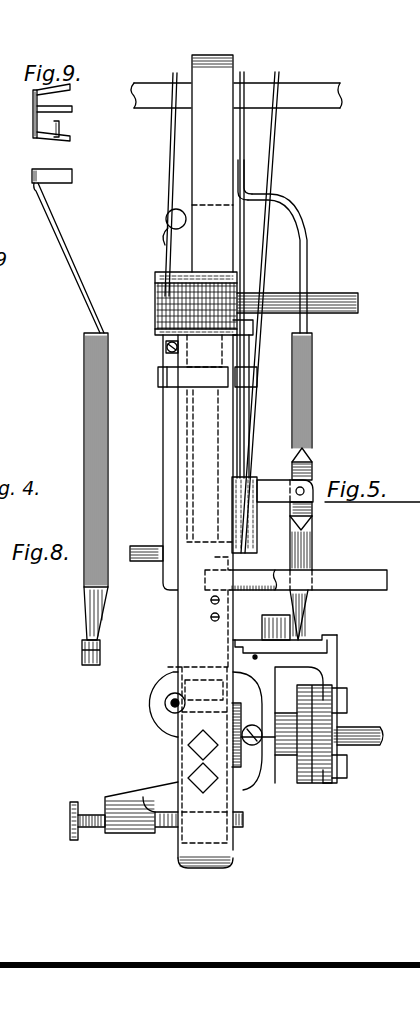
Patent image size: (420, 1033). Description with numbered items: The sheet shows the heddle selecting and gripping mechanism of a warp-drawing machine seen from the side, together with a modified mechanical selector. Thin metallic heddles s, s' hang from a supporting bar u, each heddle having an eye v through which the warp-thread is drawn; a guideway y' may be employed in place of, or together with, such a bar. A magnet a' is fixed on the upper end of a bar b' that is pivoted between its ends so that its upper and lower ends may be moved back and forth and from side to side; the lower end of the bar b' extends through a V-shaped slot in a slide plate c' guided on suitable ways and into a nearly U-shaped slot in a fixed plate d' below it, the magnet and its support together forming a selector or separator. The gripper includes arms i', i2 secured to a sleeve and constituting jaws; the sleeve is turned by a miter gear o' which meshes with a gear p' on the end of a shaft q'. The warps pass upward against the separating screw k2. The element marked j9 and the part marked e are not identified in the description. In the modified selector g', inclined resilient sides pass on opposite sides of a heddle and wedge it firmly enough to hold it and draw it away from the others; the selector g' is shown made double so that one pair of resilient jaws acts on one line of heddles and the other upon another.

In FIG. 5, the supporting bar u is at (342, 95).
In FIG. 5, the metallic heddle s is at (163, 184).
In FIG. 9, the metallic heddle s' is at (83, 124).
In FIG. 5, the metallic heddle s' is at (253, 275).
In FIG. 5, the magnet a' is at (273, 246).
In FIG. 5, the separating screw k2 is at (155, 303).
In FIG. 5, the rod j9 is at (360, 303).
In FIG. 5, the screw e is at (166, 346).
In FIG. 5, the eye v is at (166, 353).
In FIG. 5, the gripper arm i' is at (244, 444).
In FIG. 5, the gripper arm i2 is at (163, 387).
In FIG. 8, the bar b' is at (80, 499).
In FIG. 5, the bar b' is at (304, 486).
In FIG. 5, the guideway y' is at (296, 588).
In FIG. 5, the slide plate c' is at (300, 630).
In FIG. 5, the fixed plate d' is at (308, 654).
In FIG. 5, the shaft q' is at (339, 734).
In FIG. 5, the miter gear o' is at (151, 704).
In FIG. 5, the gear p' is at (202, 735).
In FIG. 9, the selector g' is at (67, 120).
In FIG. 8, the selector g' is at (68, 250).